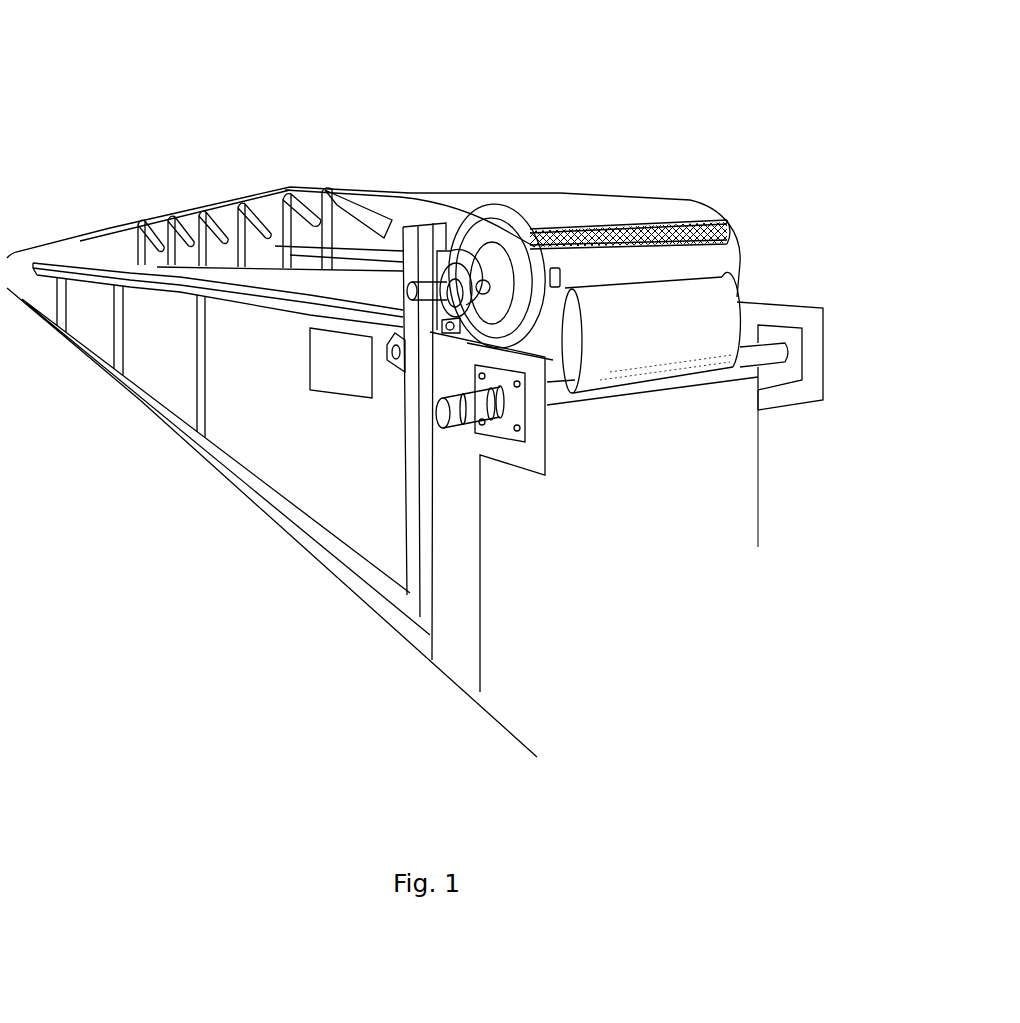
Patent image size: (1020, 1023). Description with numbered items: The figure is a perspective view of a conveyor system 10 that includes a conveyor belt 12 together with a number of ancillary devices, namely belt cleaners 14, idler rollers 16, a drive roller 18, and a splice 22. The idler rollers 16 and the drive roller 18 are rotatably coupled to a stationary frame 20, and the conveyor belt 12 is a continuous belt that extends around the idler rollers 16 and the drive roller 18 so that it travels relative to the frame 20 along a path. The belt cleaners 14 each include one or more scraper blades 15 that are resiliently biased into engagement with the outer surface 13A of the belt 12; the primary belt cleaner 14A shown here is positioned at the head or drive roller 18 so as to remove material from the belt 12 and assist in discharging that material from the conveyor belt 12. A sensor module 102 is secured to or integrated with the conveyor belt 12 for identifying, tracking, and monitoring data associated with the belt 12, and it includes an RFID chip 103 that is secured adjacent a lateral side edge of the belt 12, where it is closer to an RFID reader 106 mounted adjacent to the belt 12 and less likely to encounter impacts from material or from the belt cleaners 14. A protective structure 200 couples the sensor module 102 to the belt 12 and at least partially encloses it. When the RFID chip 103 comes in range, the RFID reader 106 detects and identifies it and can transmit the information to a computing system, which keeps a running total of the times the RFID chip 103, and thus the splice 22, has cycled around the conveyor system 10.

The conveyor system 10 is at (94, 55).
The conveyor belt 12 is at (572, 208).
The outer surface 13A is at (696, 272).
The belt cleaner 14 is at (831, 371).
The primary belt cleaner 14A is at (755, 292).
The scraper blade 15 is at (661, 325).
The idler rollers 16 is at (263, 217).
The drive roller 18 is at (483, 260).
The frame 20 is at (415, 465).
The splice 22 is at (733, 230).
The sensor module 102 is at (631, 413).
The RFID chip 103 is at (631, 413).
The protective structure 200 is at (555, 288).
The RFID reader 106 is at (310, 390).